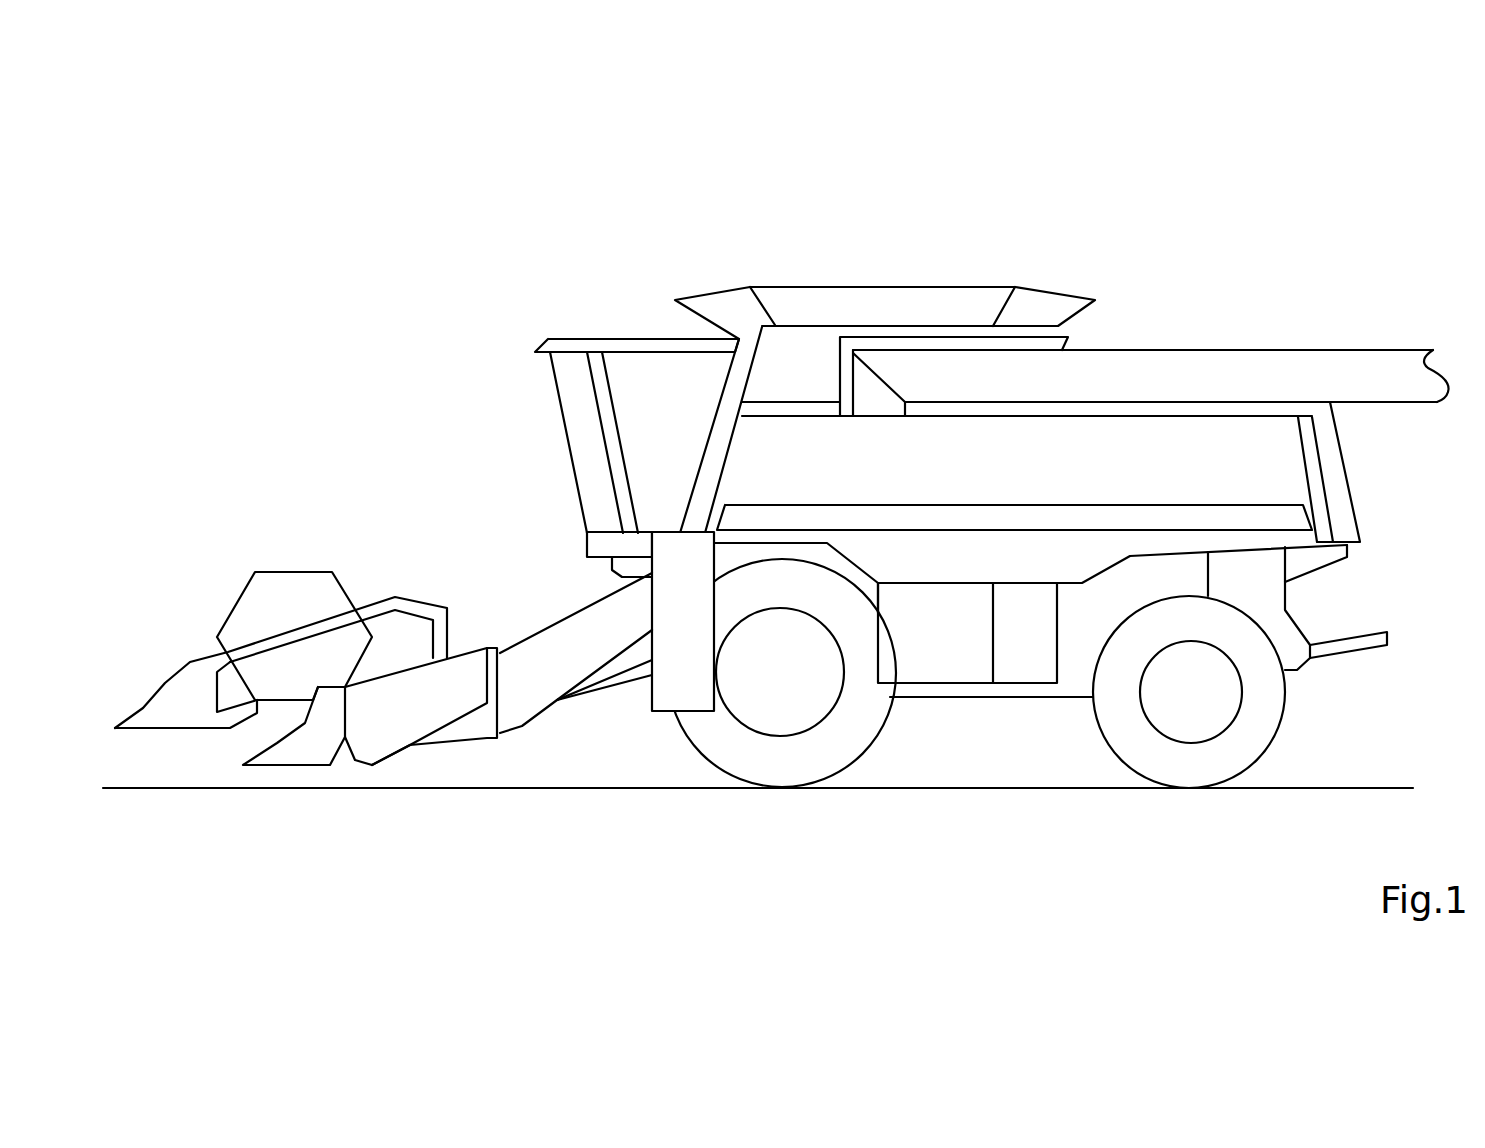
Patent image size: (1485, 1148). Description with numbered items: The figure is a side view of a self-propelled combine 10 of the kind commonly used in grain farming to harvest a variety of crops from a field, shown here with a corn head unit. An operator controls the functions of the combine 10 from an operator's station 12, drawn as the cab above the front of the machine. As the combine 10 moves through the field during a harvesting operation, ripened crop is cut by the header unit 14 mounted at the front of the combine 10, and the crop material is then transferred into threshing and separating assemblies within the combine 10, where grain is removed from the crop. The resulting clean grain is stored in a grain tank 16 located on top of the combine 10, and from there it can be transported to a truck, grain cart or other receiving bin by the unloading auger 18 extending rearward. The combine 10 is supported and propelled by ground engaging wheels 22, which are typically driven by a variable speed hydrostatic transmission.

The self-propelled combine 10 is at (780, 482).
The operator's station 12 is at (575, 519).
The header unit 14 is at (383, 616).
The grain tank 16 is at (885, 261).
The unloading auger 18 is at (1155, 329).
The ground engaging wheels 22 is at (932, 722).